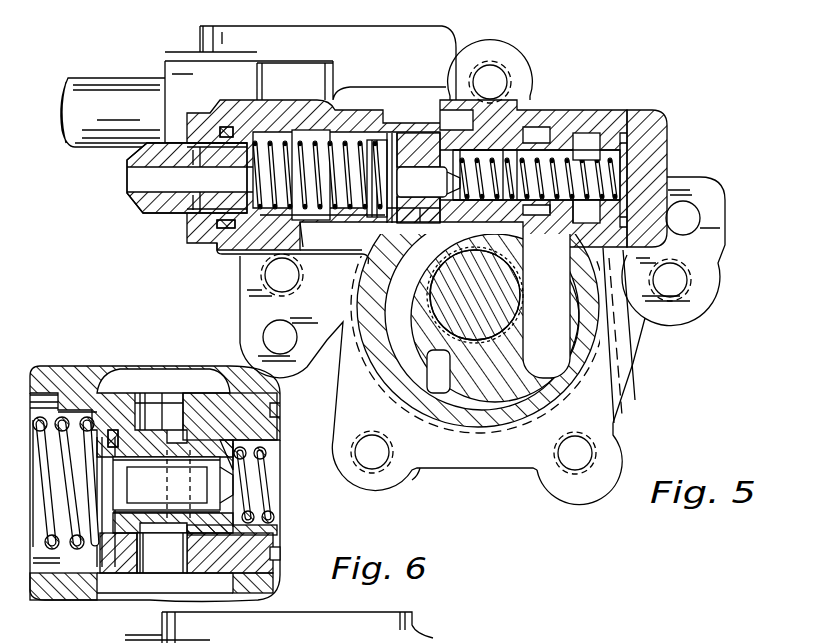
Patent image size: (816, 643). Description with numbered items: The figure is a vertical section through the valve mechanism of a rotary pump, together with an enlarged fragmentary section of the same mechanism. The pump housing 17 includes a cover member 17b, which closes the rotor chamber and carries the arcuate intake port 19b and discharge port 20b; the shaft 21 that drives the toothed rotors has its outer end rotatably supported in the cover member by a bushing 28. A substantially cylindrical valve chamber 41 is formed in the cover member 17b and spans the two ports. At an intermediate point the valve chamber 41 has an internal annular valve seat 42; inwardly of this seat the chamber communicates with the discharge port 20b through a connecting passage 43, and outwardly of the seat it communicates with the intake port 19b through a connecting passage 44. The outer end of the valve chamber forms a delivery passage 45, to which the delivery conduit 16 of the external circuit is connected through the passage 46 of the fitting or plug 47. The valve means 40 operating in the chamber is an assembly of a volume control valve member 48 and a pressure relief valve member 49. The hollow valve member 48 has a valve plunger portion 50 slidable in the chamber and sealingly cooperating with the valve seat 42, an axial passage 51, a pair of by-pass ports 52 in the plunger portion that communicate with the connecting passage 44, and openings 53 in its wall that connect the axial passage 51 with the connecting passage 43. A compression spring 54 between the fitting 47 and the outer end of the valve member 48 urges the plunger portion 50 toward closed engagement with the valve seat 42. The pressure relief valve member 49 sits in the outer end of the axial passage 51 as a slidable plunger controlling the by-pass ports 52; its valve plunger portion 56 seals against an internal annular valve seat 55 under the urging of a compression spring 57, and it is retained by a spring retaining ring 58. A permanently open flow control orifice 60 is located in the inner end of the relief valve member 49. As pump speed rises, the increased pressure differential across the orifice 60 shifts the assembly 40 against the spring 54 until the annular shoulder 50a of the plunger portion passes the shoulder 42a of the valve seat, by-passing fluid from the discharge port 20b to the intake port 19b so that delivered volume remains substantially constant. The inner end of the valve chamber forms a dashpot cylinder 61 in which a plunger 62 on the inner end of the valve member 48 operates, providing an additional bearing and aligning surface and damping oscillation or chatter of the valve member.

In FIG. 5, the delivery conduit 16 is at (128, 82).
In FIG. 5, the housing 17 is at (486, 477).
In FIG. 5, the cover member 17b is at (597, 410).
In FIG. 5, the intake port 19b is at (411, 478).
In FIG. 5, the discharge port 20b is at (605, 367).
In FIG. 5, the shaft 21 is at (465, 350).
In FIG. 5, the bushing 28 is at (528, 342).
In FIG. 5, the valve means 40 is at (506, 128).
In FIG. 6, the valve means 40 is at (201, 390).
In FIG. 5, the valve chamber 41 is at (545, 135).
In FIG. 6, the valve chamber 41 is at (150, 392).
In FIG. 5, the valve seat 42 is at (520, 133).
In FIG. 5, the annular edge or shoulder 42a is at (475, 295).
In FIG. 6, the annular edge or shoulder 42a is at (222, 575).
In FIG. 5, the connecting passage 43 is at (556, 232).
In FIG. 5, the connecting passage 44 is at (356, 256).
In FIG. 6, the connecting passage 44 is at (112, 600).
In FIG. 5, the delivery passage 45 is at (242, 262).
In FIG. 6, the delivery passage 45 is at (45, 578).
In FIG. 5, the passage 46 is at (134, 177).
In FIG. 5, the fitting or plug 47 is at (180, 233).
In FIG. 5, the volume control valve member 48 is at (583, 150).
In FIG. 6, the volume control valve member 48 is at (284, 428).
In FIG. 5, the pressure relief valve member 49 is at (428, 182).
In FIG. 6, the pressure relief valve member 49 is at (230, 416).
In FIG. 5, the valve plunger portion 50 is at (435, 132).
In FIG. 6, the valve plunger portion 50 is at (277, 590).
In FIG. 5, the annular edge or shoulder 50a is at (412, 222).
In FIG. 6, the annular edge or shoulder 50a is at (273, 563).
In FIG. 5, the axial passage 51 is at (532, 206).
In FIG. 6, the axial passage 51 is at (278, 537).
In FIG. 5, the by-pass ports 52 is at (407, 222).
In FIG. 6, the by-pass ports 52 is at (205, 553).
In FIG. 5, the openings 53 is at (600, 132).
In FIG. 5, the compression spring 54 is at (305, 170).
In FIG. 6, the compression spring 54 is at (28, 400).
In FIG. 5, the internal annular valve seat 55 is at (400, 150).
In FIG. 6, the internal annular valve seat 55 is at (117, 393).
In FIG. 5, the valve plunger portion 56 is at (262, 216).
In FIG. 6, the valve plunger portion 56 is at (105, 603).
In FIG. 5, the compression spring 57 is at (620, 178).
In FIG. 6, the compression spring 57 is at (263, 480).
In FIG. 5, the spring retaining ring 58 is at (311, 173).
In FIG. 6, the spring retaining ring 58 is at (112, 503).
In FIG. 5, the flow control orifice 60 is at (475, 150).
In FIG. 6, the flow control orifice 60 is at (273, 500).
In FIG. 5, the dashpot chamber or cylinder 61 is at (630, 133).
In FIG. 5, the plunger 62 is at (638, 251).